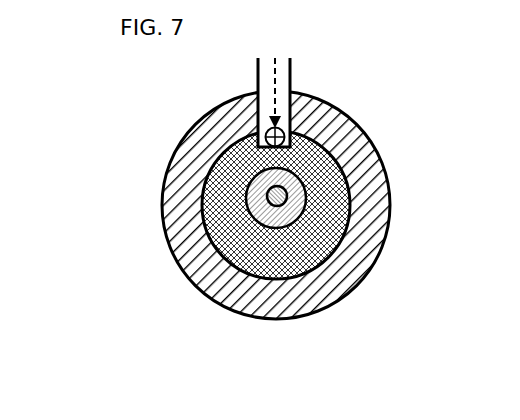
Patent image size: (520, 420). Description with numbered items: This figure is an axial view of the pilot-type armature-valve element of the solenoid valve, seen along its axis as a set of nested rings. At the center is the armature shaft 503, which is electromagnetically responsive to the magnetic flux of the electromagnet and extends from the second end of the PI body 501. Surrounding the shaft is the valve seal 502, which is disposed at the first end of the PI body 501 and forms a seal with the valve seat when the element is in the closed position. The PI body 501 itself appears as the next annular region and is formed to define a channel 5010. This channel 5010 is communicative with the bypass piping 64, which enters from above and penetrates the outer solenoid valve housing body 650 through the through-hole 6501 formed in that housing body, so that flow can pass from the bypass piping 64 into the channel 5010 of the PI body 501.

The bypass piping 64 is at (290, 77).
The solenoid valve housing body 650 is at (254, 114).
The through-hole 6501 is at (333, 103).
The channel 5010 is at (285, 138).
The PI body 501 is at (215, 210).
The valve seal 502 is at (297, 198).
The armature shaft 503 is at (270, 204).